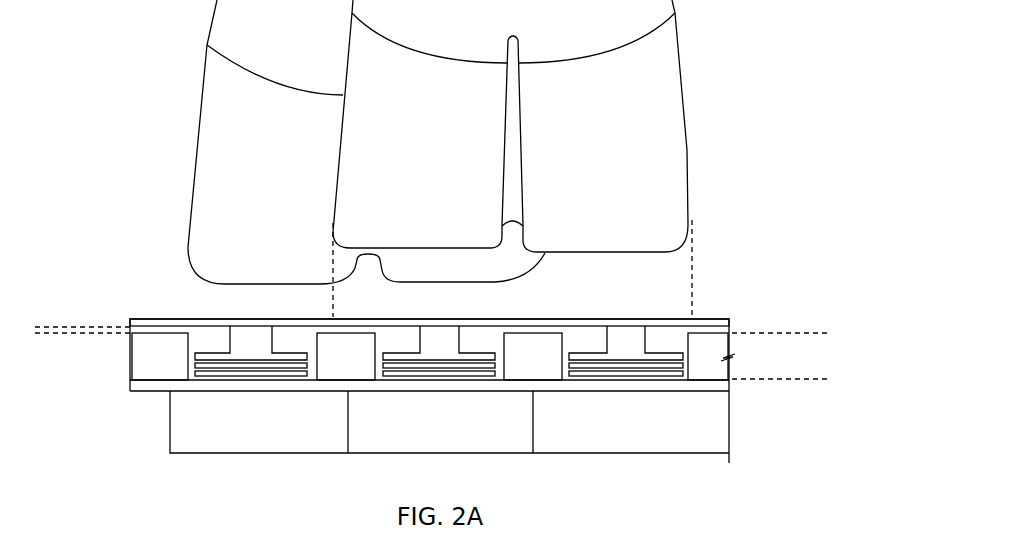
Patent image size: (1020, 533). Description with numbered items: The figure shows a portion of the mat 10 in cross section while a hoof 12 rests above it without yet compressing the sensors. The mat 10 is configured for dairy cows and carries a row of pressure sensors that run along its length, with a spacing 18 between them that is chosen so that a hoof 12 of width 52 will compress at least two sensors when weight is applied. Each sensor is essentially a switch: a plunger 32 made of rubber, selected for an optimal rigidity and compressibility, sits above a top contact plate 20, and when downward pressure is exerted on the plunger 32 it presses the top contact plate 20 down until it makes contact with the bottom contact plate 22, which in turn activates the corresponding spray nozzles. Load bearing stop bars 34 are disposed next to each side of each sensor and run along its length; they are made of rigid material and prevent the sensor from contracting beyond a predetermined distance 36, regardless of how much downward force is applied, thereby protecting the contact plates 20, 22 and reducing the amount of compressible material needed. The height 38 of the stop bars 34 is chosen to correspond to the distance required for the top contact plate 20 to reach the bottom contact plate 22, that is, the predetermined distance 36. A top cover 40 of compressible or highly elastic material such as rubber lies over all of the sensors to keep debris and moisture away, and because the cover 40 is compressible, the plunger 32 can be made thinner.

The mat 10 is at (742, 330).
The hoof 12 is at (200, 98).
The spacing 18 is at (499, 385).
The top contact plate 20 is at (198, 371).
The bottom contact plate 22 is at (208, 377).
The plunger 32 is at (232, 338).
The stop bars 34 is at (160, 333).
The predetermined distance 36 is at (55, 263).
The height of stop bars 38 is at (809, 270).
The top cover 40 is at (700, 318).
The width 52 is at (680, 306).